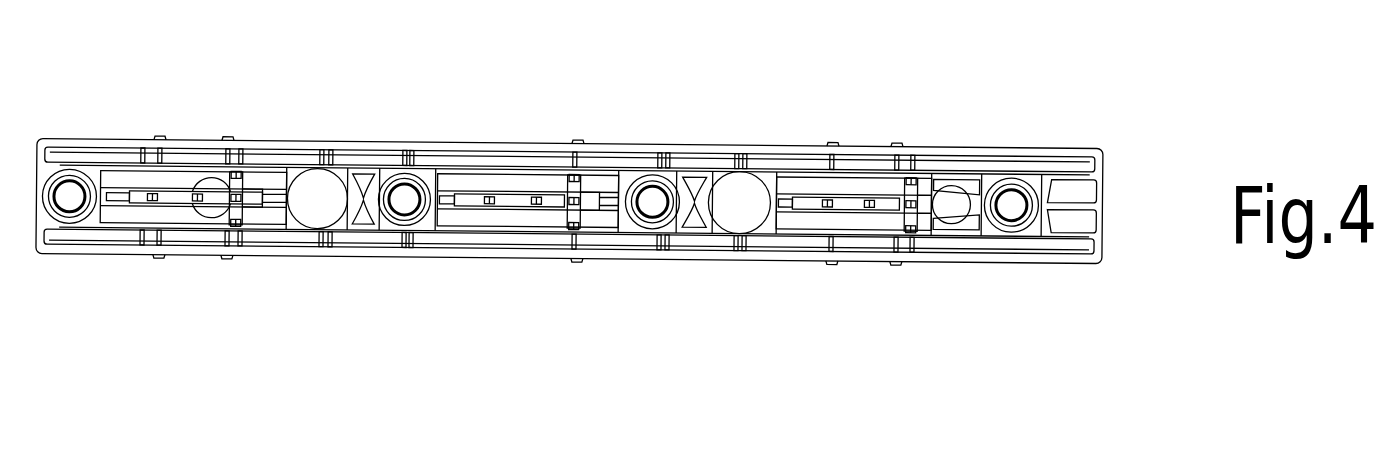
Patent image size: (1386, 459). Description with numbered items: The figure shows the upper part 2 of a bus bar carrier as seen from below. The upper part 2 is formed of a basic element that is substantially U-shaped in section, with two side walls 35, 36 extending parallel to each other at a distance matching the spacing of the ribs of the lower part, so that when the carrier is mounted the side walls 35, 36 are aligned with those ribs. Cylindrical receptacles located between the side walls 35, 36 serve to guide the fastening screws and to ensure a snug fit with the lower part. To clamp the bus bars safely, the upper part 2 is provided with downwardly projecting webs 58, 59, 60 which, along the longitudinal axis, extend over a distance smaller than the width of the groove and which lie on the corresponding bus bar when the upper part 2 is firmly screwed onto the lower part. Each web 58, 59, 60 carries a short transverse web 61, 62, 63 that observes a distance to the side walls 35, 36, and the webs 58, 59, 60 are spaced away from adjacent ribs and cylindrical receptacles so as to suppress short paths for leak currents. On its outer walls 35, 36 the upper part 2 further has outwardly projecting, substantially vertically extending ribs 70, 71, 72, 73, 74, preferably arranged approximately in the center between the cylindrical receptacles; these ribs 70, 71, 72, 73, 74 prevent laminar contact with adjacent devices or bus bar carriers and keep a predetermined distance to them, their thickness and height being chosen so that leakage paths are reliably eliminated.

The upper part 2 is at (1120, 100).
The side wall 35 is at (600, 144).
The side wall 36 is at (577, 261).
The web 58 is at (173, 197).
The web 59 is at (513, 198).
The web 60 is at (857, 202).
The transverse web 61 is at (243, 183).
The transverse web 62 is at (575, 187).
The transverse web 63 is at (913, 193).
The outwardly projecting rib 70 is at (162, 139).
The outwardly projecting rib 71 is at (222, 148).
The outwardly projecting rib 72 is at (530, 143).
The outwardly projecting rib 73 is at (837, 146).
The outwardly projecting rib 74 is at (898, 146).